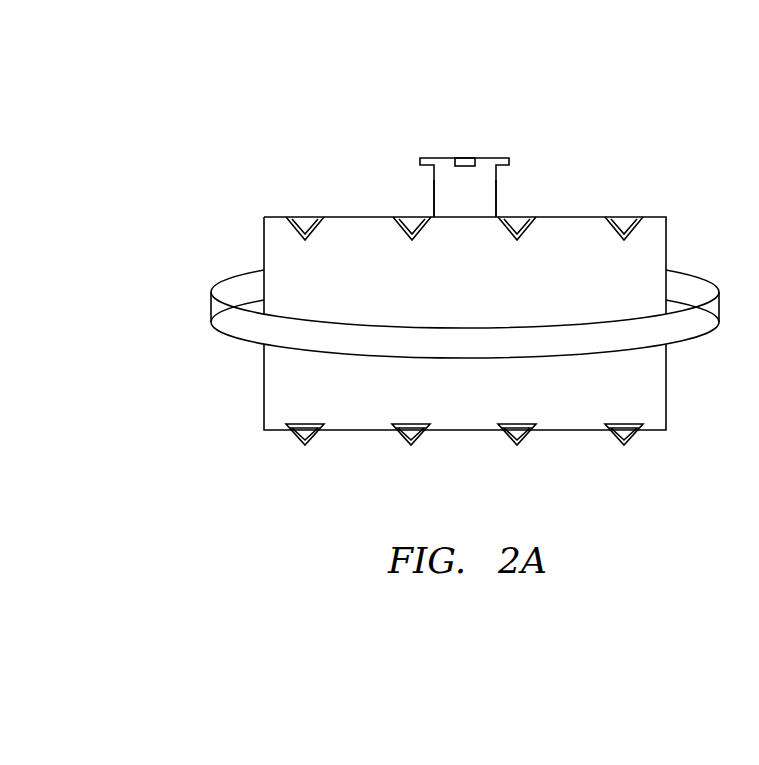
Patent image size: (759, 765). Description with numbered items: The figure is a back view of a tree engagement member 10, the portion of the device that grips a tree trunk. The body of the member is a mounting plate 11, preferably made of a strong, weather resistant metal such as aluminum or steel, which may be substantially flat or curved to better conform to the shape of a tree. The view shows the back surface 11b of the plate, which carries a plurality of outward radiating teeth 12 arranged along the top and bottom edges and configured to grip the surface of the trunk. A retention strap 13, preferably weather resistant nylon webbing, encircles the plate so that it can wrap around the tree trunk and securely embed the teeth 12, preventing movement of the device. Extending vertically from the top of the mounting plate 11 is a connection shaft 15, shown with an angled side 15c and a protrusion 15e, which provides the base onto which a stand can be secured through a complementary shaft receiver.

The tree engagement member 10 is at (214, 143).
The mounting plate 11 is at (666, 390).
The back surface 11b is at (486, 308).
The outward radiating teeth 12 is at (410, 217).
The retention strap 13 is at (247, 333).
The connection shaft 15 is at (434, 195).
The angled side 15c is at (477, 184).
The protrusion 15e is at (465, 158).